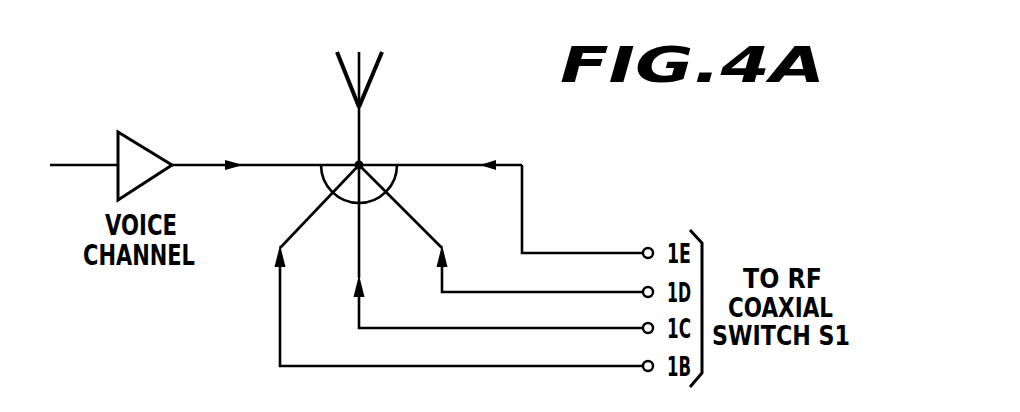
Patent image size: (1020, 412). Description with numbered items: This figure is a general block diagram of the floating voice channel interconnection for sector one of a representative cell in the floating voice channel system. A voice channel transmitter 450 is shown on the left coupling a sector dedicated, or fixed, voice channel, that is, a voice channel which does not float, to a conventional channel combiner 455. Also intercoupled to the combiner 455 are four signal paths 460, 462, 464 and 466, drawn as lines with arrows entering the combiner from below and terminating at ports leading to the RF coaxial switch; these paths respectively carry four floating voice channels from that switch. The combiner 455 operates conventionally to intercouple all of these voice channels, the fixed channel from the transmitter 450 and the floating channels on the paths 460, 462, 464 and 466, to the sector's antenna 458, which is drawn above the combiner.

The voice channel transmitter 450 is at (127, 137).
The channel combiner 455 is at (385, 172).
The antenna 458 is at (378, 61).
The signal path 460 is at (557, 365).
The signal path 462 is at (557, 327).
The signal path 464 is at (557, 290).
The signal path 466 is at (557, 252).